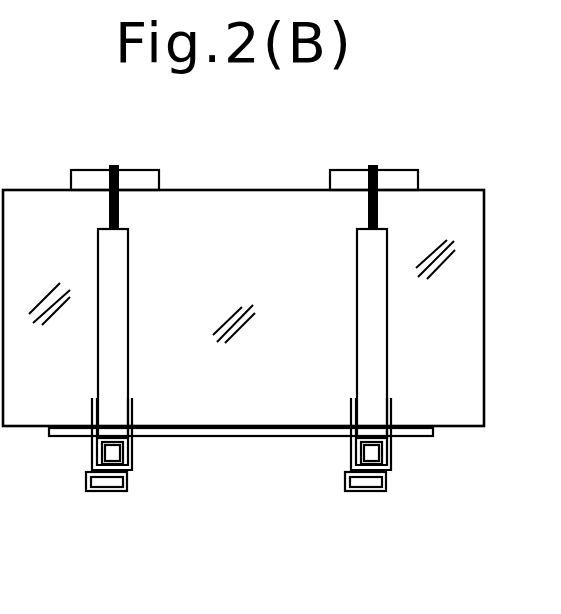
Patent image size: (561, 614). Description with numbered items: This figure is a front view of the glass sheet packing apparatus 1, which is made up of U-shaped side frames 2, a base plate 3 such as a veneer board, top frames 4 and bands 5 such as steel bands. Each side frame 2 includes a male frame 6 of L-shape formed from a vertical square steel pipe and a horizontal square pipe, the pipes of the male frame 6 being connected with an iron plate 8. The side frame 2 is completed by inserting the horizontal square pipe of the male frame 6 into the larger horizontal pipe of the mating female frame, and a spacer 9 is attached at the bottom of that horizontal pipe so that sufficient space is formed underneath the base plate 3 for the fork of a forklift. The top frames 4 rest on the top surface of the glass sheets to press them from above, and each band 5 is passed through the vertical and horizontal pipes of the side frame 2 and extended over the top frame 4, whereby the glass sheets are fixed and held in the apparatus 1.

The glass sheet packing apparatus 1 is at (271, 183).
The side frame 2 is at (151, 265).
The base plate 3 is at (250, 437).
The top frame 4 is at (160, 171).
The band 5 is at (115, 165).
The male frame 6 is at (117, 295).
The iron plate 8 is at (134, 406).
The spacer 9 is at (111, 491).